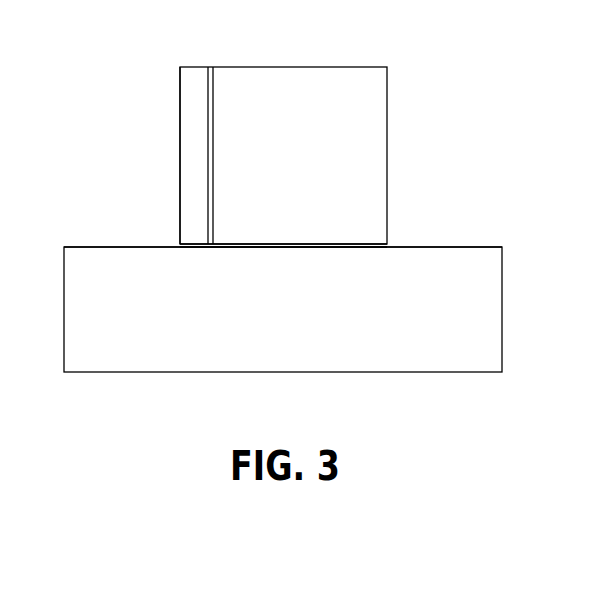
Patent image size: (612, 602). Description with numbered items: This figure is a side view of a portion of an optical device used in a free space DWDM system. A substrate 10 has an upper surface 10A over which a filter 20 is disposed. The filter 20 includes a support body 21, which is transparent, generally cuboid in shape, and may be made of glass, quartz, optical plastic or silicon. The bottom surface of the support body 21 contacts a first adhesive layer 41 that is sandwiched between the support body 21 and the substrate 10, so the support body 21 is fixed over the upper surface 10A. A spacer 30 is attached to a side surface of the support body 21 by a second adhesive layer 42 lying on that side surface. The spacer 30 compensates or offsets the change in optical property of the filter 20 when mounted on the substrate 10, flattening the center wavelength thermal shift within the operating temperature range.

The substrate 10 is at (450, 321).
The upper surface 10A is at (481, 247).
The filter 20 is at (448, 231).
The support body 21 is at (312, 168).
The spacer 30 is at (195, 148).
The first adhesive layer 41 is at (224, 248).
The second adhesive layer 42 is at (210, 80).